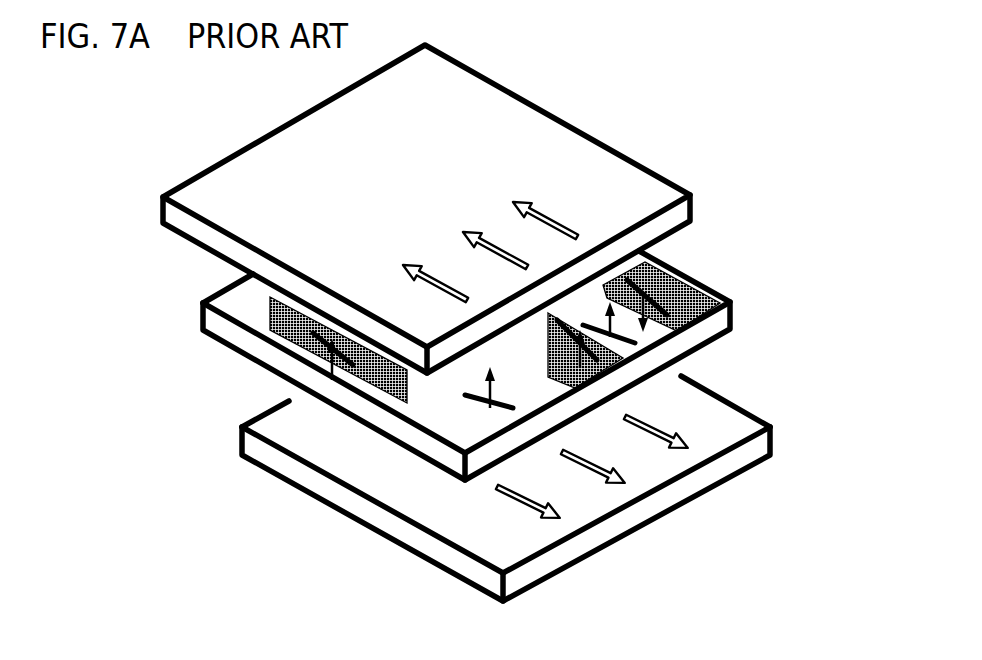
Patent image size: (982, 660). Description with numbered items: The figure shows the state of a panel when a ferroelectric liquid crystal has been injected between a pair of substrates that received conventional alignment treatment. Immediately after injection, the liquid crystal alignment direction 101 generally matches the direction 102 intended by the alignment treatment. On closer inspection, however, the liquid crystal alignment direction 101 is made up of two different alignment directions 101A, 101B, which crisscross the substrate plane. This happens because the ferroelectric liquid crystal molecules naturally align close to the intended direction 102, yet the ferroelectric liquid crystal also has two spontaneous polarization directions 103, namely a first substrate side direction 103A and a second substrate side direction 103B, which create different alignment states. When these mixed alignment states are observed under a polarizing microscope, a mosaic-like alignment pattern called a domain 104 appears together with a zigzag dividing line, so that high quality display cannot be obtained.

The liquid crystal alignment direction 101 is at (97, 513).
The first alignment direction 101A is at (465, 395).
The second alignment direction 101B is at (550, 357).
The direction intended by the alignment treatment 102 is at (657, 430).
The spontaneous polarization directions 103 is at (845, 503).
The first substrate side direction 103A is at (493, 400).
The second substrate side direction 103B is at (623, 370).
The domain 104 is at (295, 348).